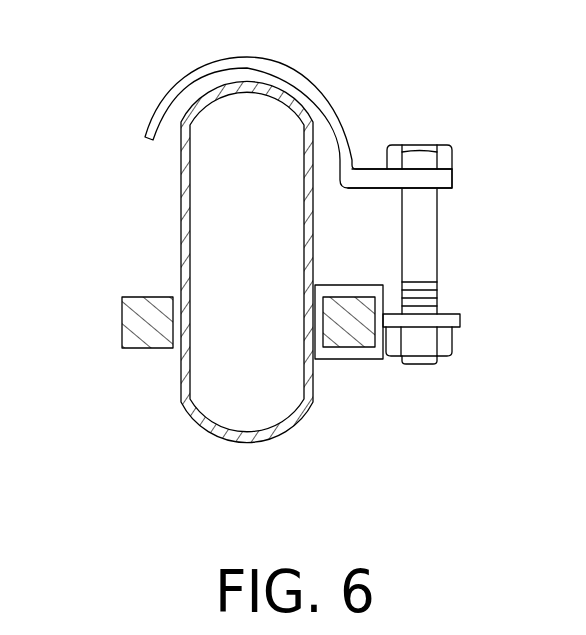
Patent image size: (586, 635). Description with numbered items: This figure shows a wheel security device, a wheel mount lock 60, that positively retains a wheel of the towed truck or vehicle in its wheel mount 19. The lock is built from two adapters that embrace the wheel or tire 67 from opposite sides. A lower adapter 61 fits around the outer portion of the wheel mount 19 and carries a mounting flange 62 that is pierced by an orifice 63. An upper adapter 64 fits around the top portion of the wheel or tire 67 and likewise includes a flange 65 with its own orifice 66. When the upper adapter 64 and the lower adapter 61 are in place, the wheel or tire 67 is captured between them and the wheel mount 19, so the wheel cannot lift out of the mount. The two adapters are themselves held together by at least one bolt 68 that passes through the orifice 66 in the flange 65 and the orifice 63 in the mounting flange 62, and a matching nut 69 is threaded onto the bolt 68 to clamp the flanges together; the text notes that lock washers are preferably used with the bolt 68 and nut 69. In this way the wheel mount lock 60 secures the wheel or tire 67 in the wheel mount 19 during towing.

The wheel mount 19 is at (122, 326).
The wheel mount lock 60 is at (405, 100).
The lower adapter 61 is at (355, 360).
The mounting flange 62 is at (460, 320).
The orifice 63 is at (437, 307).
The upper adapter 64 is at (188, 72).
The flange 65 is at (452, 183).
The orifice 66 is at (437, 195).
The wheel or tire 67 is at (268, 440).
The bolt 68 is at (452, 157).
The nut 69 is at (453, 347).